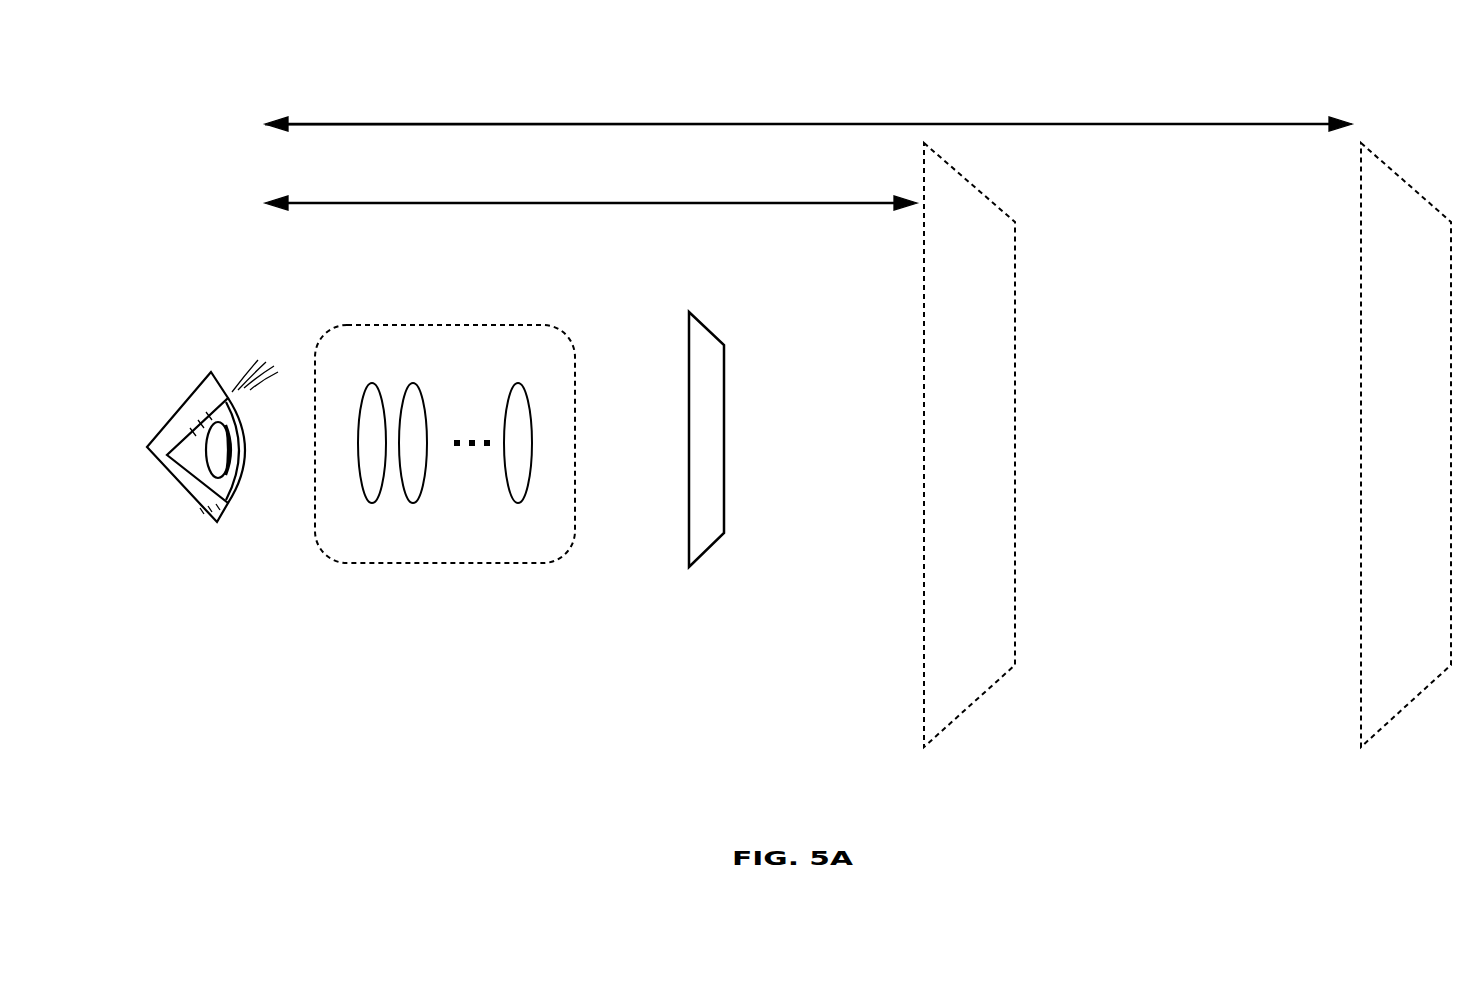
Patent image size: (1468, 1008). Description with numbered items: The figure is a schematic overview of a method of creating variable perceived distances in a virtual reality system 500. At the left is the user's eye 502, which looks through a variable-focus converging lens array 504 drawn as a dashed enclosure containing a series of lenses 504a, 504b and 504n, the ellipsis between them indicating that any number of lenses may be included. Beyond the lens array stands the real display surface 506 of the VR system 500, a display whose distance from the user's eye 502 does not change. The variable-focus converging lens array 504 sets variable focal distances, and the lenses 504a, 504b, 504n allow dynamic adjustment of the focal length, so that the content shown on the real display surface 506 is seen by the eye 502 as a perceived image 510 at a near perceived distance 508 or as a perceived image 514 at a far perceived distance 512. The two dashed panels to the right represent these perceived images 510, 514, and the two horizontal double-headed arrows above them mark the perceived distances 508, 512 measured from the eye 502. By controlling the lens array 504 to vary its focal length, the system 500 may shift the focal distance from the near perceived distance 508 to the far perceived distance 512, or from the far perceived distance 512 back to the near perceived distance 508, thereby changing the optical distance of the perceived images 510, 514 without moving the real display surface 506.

The virtual reality system 500 is at (248, 93).
The user's eye 502 is at (166, 391).
The variable-focus converging lens array 504 is at (463, 563).
The lens 504a is at (395, 366).
The lens 504b is at (447, 380).
The lens 504n is at (552, 380).
The real display surface 506 is at (725, 512).
The perceived distance 508 is at (603, 203).
The perceived image 510 is at (990, 399).
The perceived distance 512 is at (788, 124).
The perceived image 514 is at (1432, 399).